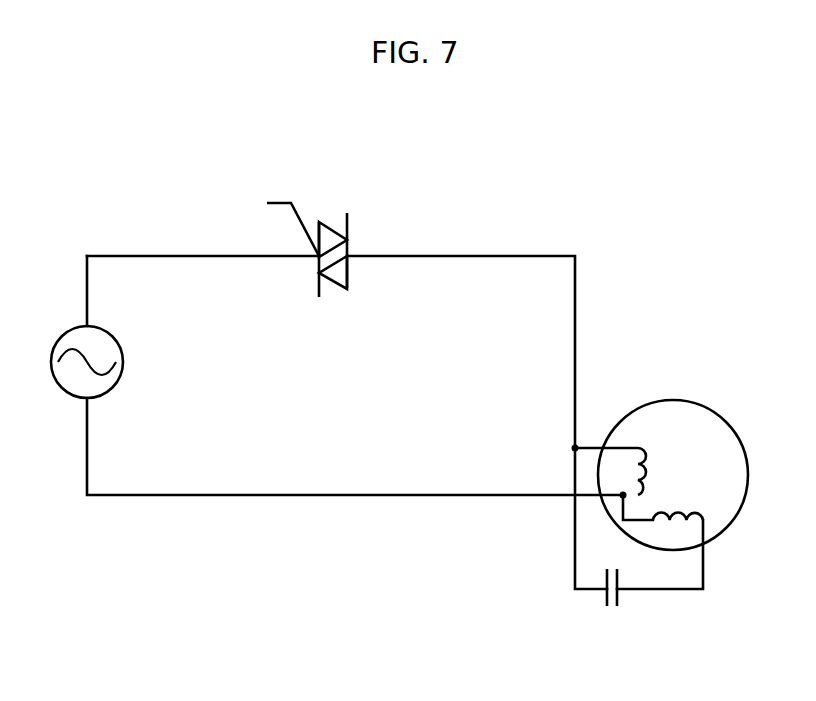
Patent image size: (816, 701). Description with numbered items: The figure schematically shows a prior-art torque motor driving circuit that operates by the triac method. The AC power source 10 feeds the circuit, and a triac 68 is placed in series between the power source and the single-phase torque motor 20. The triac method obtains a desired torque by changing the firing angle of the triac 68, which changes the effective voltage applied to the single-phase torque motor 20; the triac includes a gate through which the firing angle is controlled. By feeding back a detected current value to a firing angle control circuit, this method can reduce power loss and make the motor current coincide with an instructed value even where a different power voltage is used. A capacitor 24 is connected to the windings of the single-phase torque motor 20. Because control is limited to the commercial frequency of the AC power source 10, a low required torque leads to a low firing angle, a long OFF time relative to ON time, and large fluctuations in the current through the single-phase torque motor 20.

The AC power source 10 is at (68, 390).
The triac 68 is at (347, 213).
The single-phase torque motor 20 is at (675, 400).
The capacitor 24 is at (612, 607).